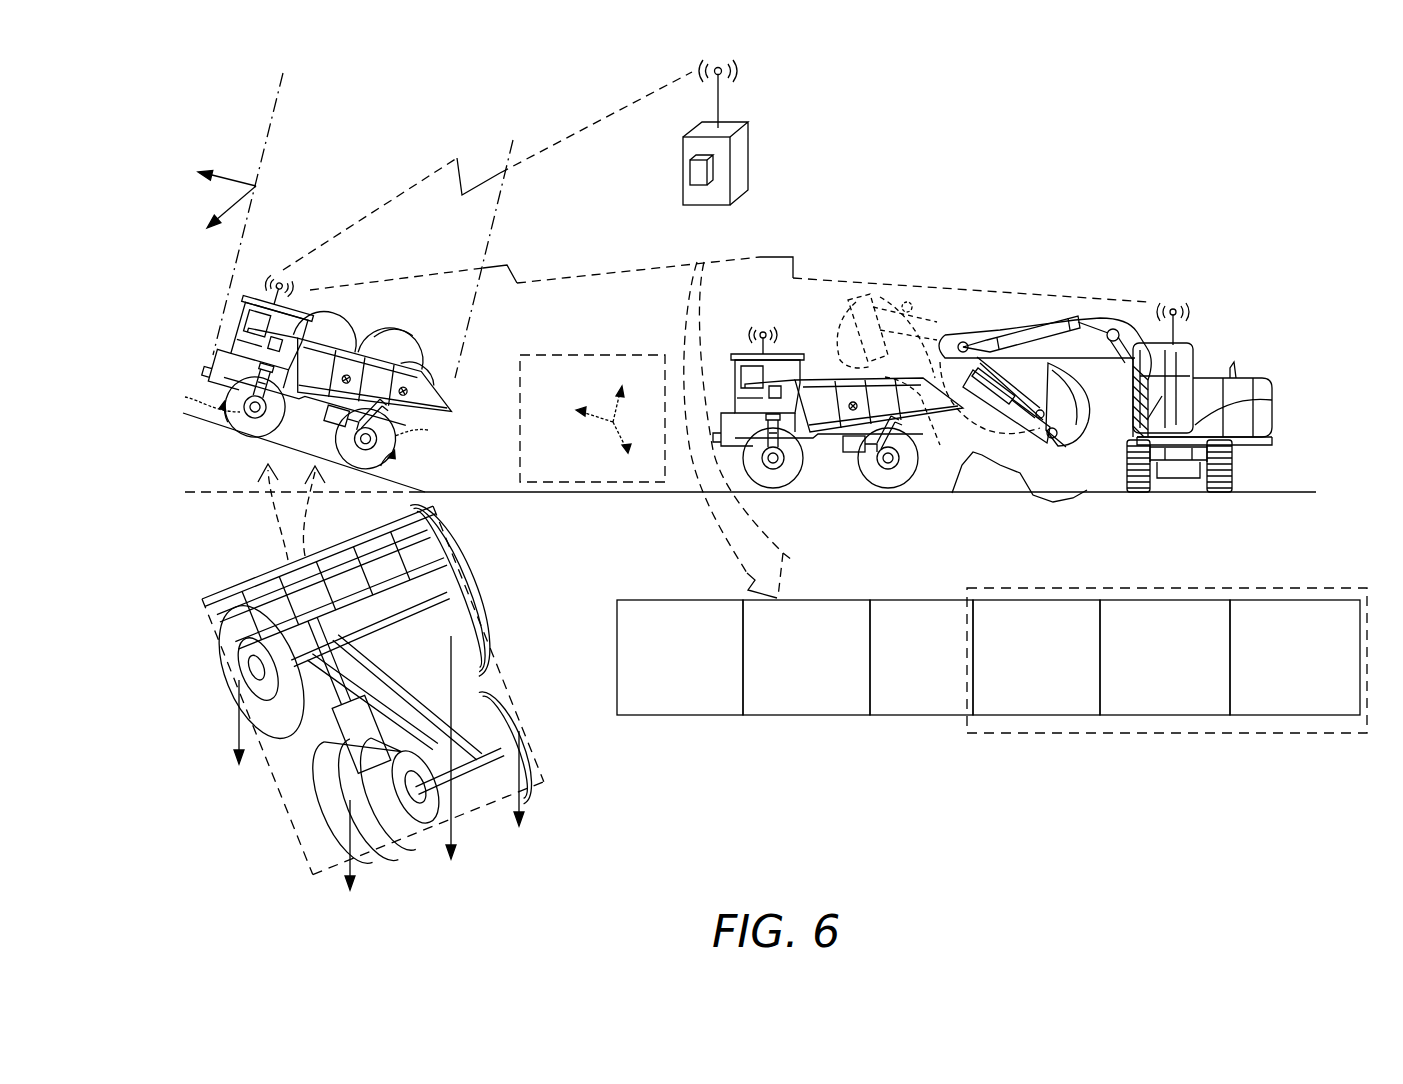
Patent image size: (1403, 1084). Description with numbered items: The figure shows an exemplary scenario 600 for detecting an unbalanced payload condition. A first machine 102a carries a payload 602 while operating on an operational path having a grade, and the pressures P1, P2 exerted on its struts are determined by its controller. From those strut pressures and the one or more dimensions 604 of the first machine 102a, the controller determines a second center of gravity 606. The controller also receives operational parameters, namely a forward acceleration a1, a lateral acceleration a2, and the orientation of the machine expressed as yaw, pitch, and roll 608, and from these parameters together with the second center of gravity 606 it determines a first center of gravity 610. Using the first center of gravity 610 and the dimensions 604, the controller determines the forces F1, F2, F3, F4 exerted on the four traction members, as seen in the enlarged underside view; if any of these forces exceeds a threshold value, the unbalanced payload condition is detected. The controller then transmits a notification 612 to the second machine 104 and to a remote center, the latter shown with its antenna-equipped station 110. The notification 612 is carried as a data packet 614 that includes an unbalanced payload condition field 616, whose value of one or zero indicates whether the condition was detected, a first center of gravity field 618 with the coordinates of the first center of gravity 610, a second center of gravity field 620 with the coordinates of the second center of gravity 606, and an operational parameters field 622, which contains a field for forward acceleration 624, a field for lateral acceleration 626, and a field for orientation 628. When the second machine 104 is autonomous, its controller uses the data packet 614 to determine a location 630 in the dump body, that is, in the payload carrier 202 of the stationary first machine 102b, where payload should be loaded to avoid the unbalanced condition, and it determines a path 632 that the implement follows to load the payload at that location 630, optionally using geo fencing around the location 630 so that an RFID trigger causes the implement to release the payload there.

The exemplary scenario 600 is at (1140, 162).
The payload 602 is at (372, 332).
The one or more dimensions of the first machine 604 is at (508, 158).
The second center of gravity 606 is at (400, 388).
The yaw, pitch, and roll 608 is at (567, 468).
The first center of gravity 610 is at (347, 375).
The notification 612 is at (643, 100).
The data packet 614 is at (624, 587).
The unbalanced payload condition field 616 is at (680, 657).
The first center of gravity field 618 is at (806, 657).
The second center of gravity field 620 is at (921, 657).
The operational parameters field 622 is at (1167, 692).
The field for forward acceleration 624 is at (1036, 657).
The field for lateral acceleration 626 is at (1165, 657).
The field for orientation 628 is at (1295, 657).
The location in the dump body 630 is at (850, 458).
The path of the implement 632 is at (1007, 444).
The first machine 102a is at (331, 412).
The first machine 102b is at (838, 418).
The second machine 104 is at (1262, 390).
The remote control station 110 is at (692, 155).
The payload carrier 202 is at (940, 445).
The pressure exerted on the strut P1 is at (425, 431).
The pressure exerted on the strut P2 is at (200, 399).
The force exerted on the traction member F1 is at (376, 694).
The force exerted on the traction member F2 is at (520, 797).
The force exerted on the traction member F3 is at (240, 738).
The force exerted on the traction member F4 is at (351, 861).
The forward acceleration a1 is at (212, 175).
The lateral acceleration a2 is at (214, 216).